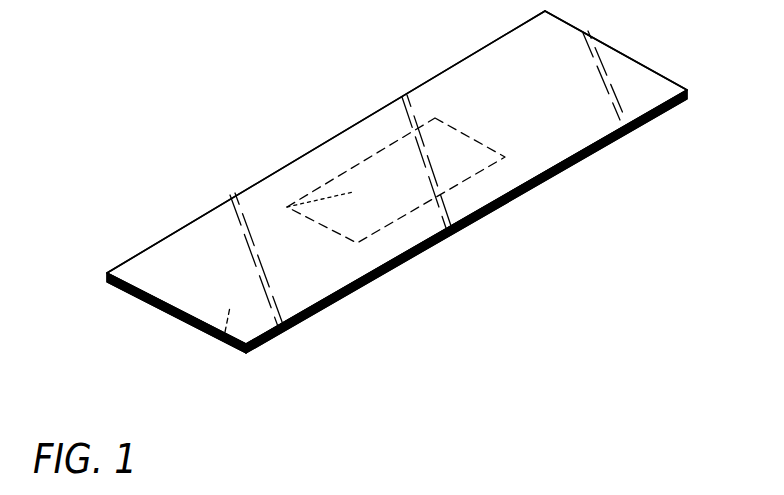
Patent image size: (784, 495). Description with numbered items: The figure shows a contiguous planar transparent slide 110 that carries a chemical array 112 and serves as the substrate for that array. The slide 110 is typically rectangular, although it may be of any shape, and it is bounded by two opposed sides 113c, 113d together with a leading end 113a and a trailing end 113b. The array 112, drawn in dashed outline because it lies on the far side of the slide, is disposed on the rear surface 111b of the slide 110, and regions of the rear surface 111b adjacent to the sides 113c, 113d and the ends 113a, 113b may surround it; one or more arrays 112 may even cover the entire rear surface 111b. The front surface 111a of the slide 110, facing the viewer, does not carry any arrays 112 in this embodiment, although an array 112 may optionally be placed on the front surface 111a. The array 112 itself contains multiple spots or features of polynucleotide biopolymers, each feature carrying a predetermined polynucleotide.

The slide 110 is at (455, 228).
The front surface 111a is at (224, 343).
The rear surface 111b is at (150, 265).
The array 112 is at (287, 208).
The leading end 113a is at (602, 46).
The trailing end 113b is at (162, 310).
The side 113c is at (285, 165).
The side 113d is at (540, 183).